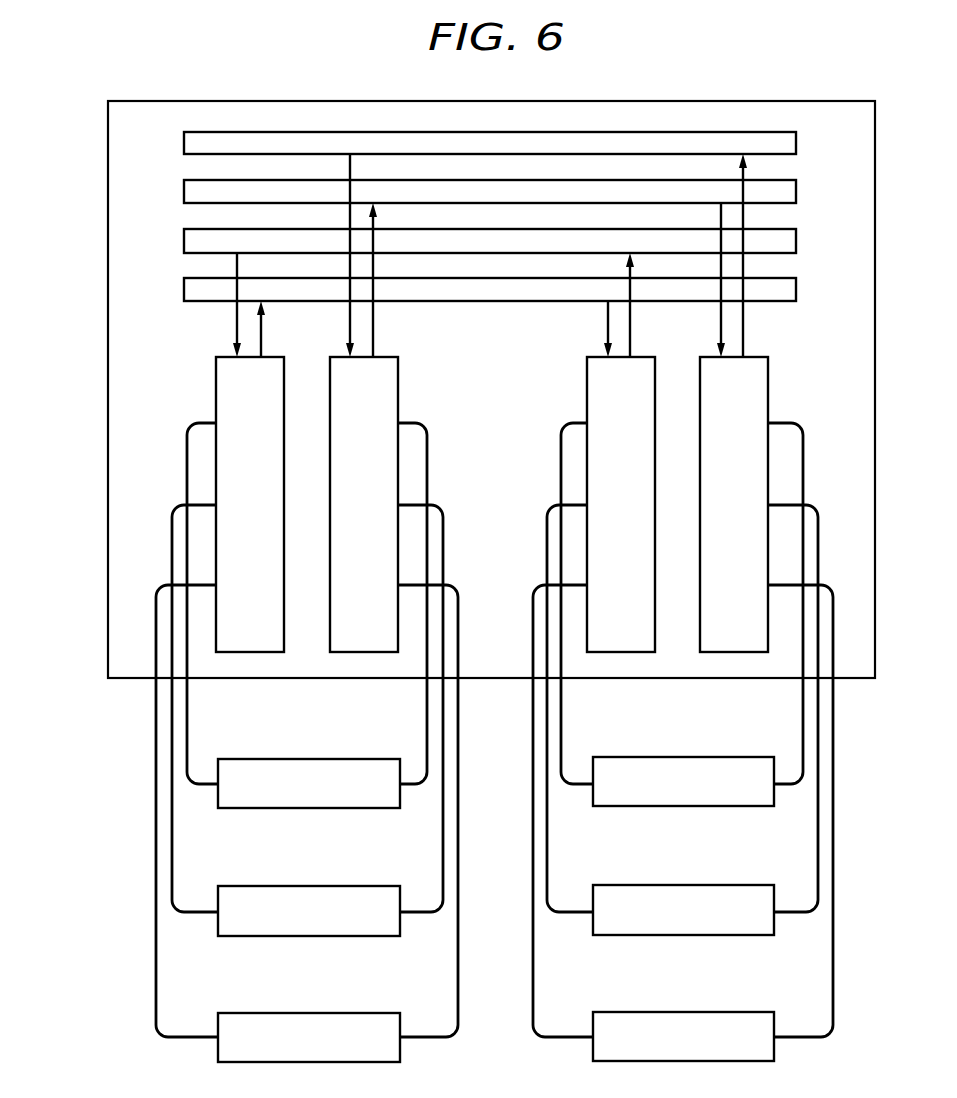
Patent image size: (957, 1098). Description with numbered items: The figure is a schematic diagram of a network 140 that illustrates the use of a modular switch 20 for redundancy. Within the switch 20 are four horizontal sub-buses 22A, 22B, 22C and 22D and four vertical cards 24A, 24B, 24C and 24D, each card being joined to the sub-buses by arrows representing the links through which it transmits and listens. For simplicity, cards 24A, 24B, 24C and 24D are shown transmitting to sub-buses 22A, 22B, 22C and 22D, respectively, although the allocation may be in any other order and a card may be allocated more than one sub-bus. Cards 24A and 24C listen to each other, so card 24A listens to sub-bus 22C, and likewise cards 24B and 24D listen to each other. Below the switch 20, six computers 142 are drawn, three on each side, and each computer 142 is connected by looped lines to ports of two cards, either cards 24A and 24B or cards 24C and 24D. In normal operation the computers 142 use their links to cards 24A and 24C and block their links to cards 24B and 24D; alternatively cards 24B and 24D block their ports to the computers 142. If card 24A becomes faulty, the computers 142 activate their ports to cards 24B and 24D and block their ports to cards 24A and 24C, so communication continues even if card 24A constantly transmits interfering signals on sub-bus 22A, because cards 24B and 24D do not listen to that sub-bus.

The network 140 is at (70, 52).
The modular switch 20 is at (191, 101).
The sub-bus 22A is at (796, 290).
The sub-bus 22B is at (796, 191).
The sub-bus 22C is at (796, 241).
The sub-bus 22D is at (796, 143).
The card 24A is at (216, 357).
The card 24B is at (330, 357).
The card 24C is at (587, 357).
The card 24D is at (700, 357).
The computer 142 is at (494, 742).